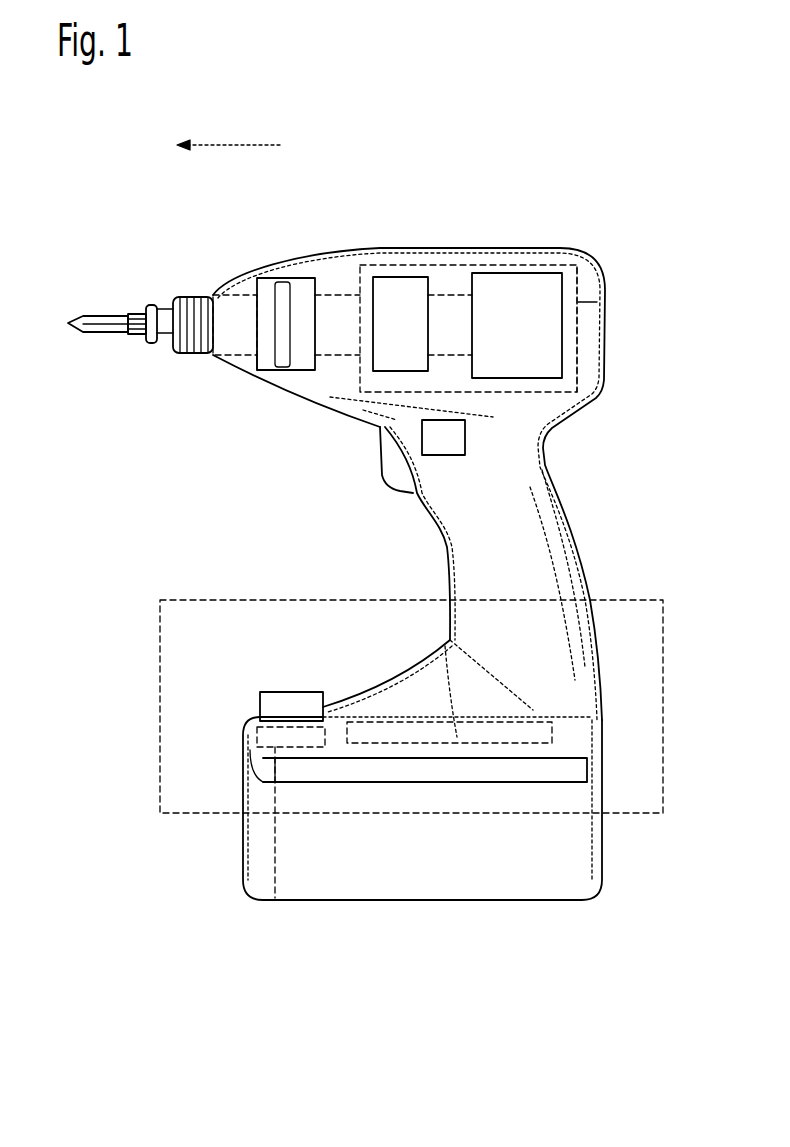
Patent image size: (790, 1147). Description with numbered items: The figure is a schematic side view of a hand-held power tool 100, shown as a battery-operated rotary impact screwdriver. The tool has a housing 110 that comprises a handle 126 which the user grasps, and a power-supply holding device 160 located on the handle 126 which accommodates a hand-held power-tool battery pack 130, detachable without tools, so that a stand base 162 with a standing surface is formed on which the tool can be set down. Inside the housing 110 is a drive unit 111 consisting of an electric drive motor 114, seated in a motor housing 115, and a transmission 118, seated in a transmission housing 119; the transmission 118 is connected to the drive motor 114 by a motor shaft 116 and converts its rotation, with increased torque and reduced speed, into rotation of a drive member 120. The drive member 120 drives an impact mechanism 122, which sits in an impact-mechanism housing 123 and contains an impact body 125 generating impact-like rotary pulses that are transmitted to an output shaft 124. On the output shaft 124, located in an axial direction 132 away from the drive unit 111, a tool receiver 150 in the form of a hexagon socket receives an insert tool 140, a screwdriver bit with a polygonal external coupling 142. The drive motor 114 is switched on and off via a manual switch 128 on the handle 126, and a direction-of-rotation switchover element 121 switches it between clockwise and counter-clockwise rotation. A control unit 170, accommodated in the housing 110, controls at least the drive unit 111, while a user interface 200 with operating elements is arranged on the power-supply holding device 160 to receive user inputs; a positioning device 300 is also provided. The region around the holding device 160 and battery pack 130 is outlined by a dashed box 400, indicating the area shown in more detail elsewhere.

The hand-held power tool 100 is at (605, 203).
The housing 110 is at (590, 335).
The drive unit 111 is at (604, 300).
The drive motor 114 is at (527, 290).
The motor housing 115 is at (492, 250).
The motor shaft 116 is at (438, 307).
The transmission 118 is at (387, 287).
The transmission housing 119 is at (410, 273).
The drive member 120 is at (327, 307).
The direction-of-rotation switchover element 121 is at (465, 440).
The impact mechanism 122 is at (288, 297).
The impact-mechanism housing 123 is at (300, 360).
The output shaft 124 is at (232, 305).
The impact body 125 is at (267, 374).
The handle 126 is at (538, 567).
The manual switch 128 is at (393, 468).
The hand-held power-tool battery pack 130 is at (465, 885).
The axial direction 132 is at (229, 142).
The insert tool 140 is at (97, 328).
The polygonal external coupling 142 is at (141, 336).
The tool receiver 150 is at (143, 290).
The power-supply holding device 160 is at (263, 770).
The stand base 162 is at (568, 743).
The control unit 170 is at (552, 730).
The user interface 200 is at (288, 689).
The positioning device 300 is at (267, 737).
The interface region 400 is at (190, 600).